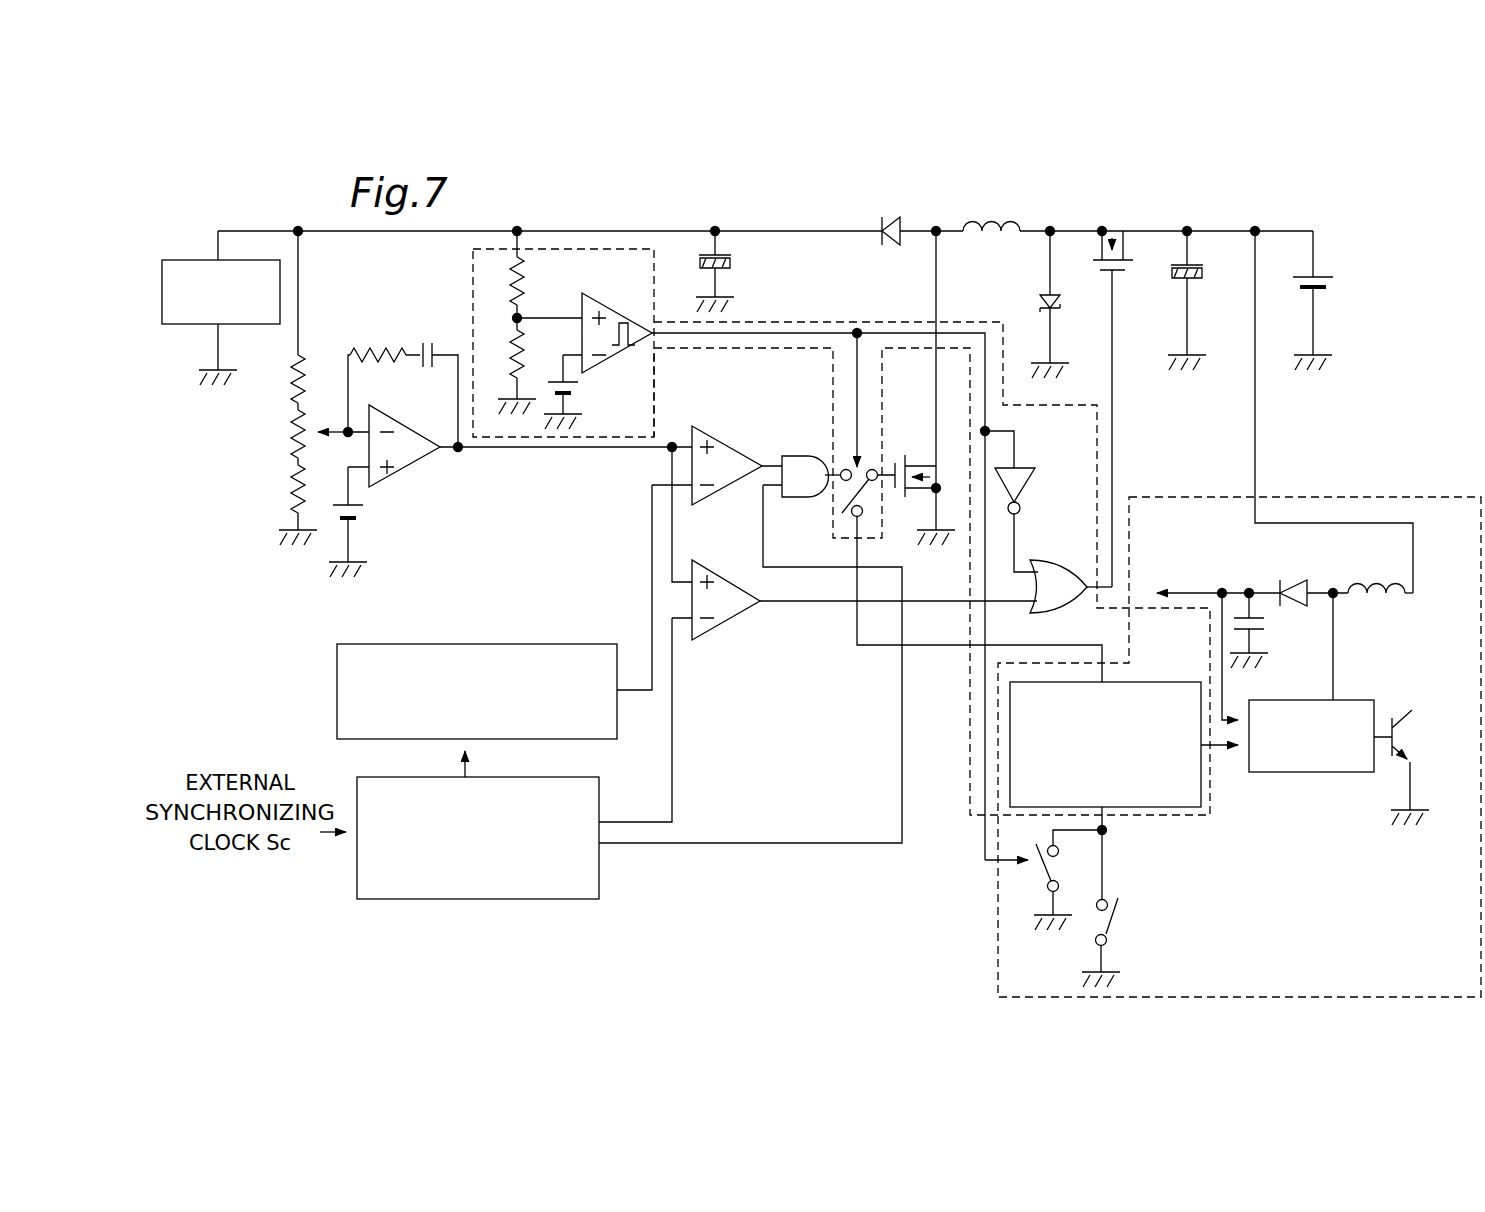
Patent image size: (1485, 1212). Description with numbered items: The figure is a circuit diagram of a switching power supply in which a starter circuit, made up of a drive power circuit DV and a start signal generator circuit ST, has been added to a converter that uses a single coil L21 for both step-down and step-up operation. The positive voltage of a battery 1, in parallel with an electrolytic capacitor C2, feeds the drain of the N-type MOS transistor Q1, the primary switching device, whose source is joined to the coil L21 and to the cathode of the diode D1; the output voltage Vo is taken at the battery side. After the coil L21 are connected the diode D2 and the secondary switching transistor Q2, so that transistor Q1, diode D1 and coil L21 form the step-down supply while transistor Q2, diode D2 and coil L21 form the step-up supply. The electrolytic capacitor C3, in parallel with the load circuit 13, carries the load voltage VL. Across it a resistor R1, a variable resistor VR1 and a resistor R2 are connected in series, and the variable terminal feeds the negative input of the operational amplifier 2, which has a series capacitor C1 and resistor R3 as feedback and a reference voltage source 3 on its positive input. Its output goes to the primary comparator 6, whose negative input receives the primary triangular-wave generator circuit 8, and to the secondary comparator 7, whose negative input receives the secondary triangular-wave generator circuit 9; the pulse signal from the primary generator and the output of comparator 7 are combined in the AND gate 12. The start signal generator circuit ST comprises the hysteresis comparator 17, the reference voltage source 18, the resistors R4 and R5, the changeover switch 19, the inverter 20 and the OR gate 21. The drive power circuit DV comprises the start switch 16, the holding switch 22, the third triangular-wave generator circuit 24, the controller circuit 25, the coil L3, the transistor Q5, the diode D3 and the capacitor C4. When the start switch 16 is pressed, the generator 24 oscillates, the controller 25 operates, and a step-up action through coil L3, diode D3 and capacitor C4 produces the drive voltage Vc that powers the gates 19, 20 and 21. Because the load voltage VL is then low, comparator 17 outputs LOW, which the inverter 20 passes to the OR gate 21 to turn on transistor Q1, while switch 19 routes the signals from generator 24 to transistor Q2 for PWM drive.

The load circuit 13 is at (184, 258).
The resistor R1 is at (292, 394).
The variable resistor VR1 is at (288, 452).
The resistor R2 is at (288, 502).
The operational amplifier 2 is at (386, 417).
The resistor R3 is at (390, 356).
The capacitor C1 is at (425, 357).
The reference voltage source 3 is at (362, 522).
The start signal generator circuit ST is at (579, 248).
The resistor R4 is at (530, 298).
The resistor R5 is at (504, 360).
The comparator 17 is at (614, 316).
The reference voltage source 18 is at (580, 392).
The load voltage VL is at (712, 214).
The electrolytic capacitor C3 is at (732, 258).
The diode D2 is at (883, 218).
The coil L21 is at (1014, 220).
The diode D1 is at (1044, 304).
The transistor Q1 is at (1090, 288).
The electrolytic capacitor C2 is at (1206, 260).
The output voltage node Vo is at (1298, 228).
The battery 1 is at (1336, 272).
The secondary comparator 7 is at (726, 444).
The changeover switch 19 is at (832, 452).
The transistor Q2 is at (897, 448).
The AND gate 12 is at (800, 498).
The inverter 20 is at (1032, 486).
The OR gate 21 is at (1042, 612).
The primary comparator 6 is at (726, 580).
The secondary triangular-wave generator circuit 9 is at (476, 644).
The primary triangular-wave generator circuit 8 is at (568, 900).
The third triangular-wave generator circuit 24 is at (1150, 808).
The holding switch 22 is at (1040, 880).
The start switch 16 is at (1112, 925).
The drive power circuit DV is at (1351, 494).
The drive voltage Vc is at (1211, 580).
The diode D3 is at (1282, 580).
The coil L3 is at (1379, 586).
The capacitor C4 is at (1266, 634).
The controller circuit 25 is at (1295, 772).
The transistor Q5 is at (1412, 731).